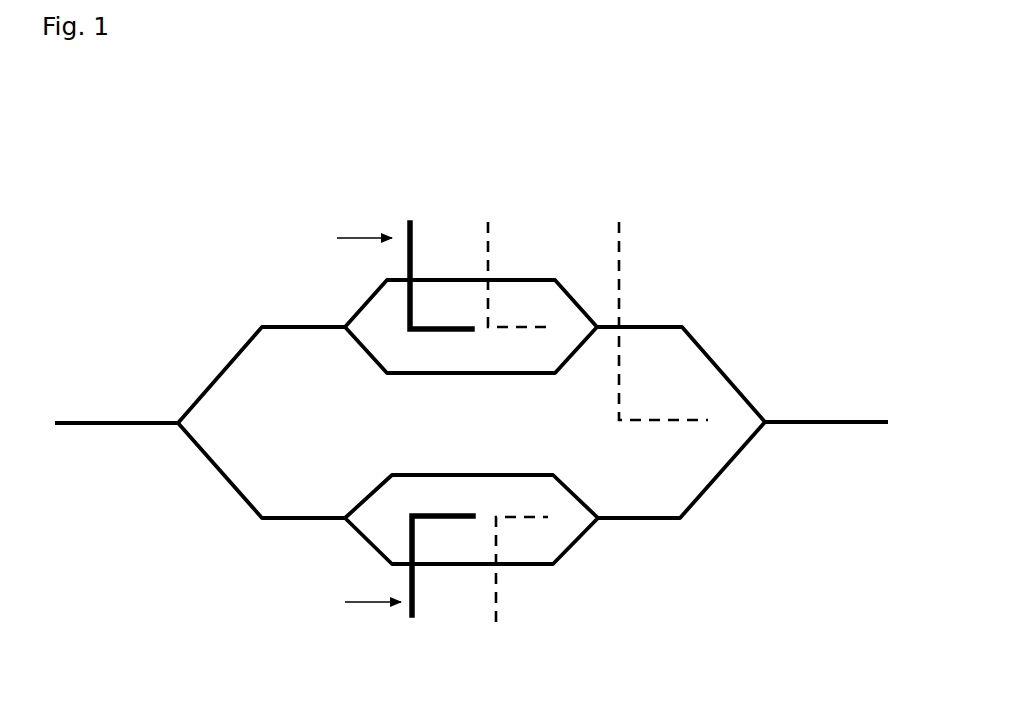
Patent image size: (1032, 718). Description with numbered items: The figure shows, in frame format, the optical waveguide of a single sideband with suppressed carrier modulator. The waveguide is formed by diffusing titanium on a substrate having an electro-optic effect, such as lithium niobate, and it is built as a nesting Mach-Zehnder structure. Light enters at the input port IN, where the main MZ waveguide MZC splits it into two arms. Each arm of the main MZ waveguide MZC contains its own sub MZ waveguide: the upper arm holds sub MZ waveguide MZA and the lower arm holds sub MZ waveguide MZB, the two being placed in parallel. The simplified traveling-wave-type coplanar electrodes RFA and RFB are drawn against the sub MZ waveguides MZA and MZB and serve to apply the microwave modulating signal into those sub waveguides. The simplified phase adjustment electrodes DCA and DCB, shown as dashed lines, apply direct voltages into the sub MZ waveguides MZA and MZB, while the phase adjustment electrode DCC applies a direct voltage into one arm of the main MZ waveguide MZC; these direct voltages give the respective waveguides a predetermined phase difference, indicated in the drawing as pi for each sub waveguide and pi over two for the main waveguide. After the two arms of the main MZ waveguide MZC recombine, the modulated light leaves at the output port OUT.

The sub MZ waveguide MZA is at (441, 269).
The sub MZ waveguide MZB is at (549, 575).
The main MZ waveguide MZC is at (652, 530).
The traveling-wave-type coplanar electrode RFA is at (362, 258).
The traveling-wave-type coplanar electrode RFB is at (332, 587).
The phase adjustment electrode DCA is at (508, 257).
The phase adjustment electrode DCB is at (512, 588).
The phase adjustment electrode DCC is at (647, 304).
The optical input waveguide IN is at (116, 403).
The optical output waveguide OUT is at (826, 404).